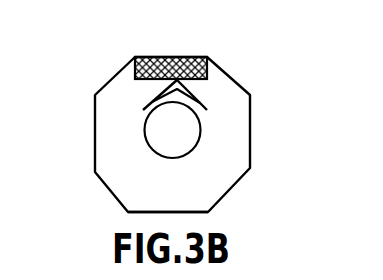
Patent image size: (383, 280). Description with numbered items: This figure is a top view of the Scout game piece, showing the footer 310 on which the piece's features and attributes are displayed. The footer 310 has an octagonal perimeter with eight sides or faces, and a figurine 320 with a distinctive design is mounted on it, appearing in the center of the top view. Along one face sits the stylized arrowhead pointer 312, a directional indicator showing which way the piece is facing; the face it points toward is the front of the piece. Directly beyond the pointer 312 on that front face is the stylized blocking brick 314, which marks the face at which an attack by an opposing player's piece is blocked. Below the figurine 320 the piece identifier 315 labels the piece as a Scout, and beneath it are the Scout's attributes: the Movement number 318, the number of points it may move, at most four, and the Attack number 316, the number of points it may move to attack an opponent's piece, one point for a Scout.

The footer 310 is at (95, 128).
The stylized arrowhead pointer 312 is at (188, 94).
The stylized blocking brick 314 is at (160, 57).
The piece identifier 315 is at (207, 174).
The Attack number 316 is at (190, 197).
The Movement number 318 is at (150, 197).
The figurine 320 is at (178, 128).